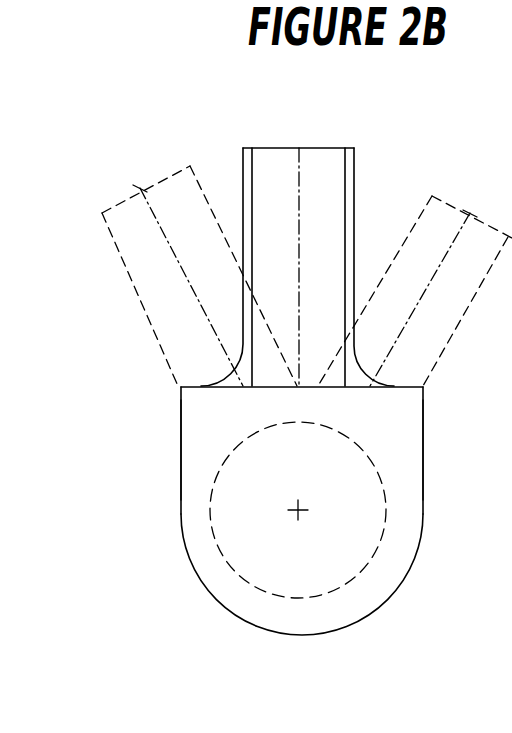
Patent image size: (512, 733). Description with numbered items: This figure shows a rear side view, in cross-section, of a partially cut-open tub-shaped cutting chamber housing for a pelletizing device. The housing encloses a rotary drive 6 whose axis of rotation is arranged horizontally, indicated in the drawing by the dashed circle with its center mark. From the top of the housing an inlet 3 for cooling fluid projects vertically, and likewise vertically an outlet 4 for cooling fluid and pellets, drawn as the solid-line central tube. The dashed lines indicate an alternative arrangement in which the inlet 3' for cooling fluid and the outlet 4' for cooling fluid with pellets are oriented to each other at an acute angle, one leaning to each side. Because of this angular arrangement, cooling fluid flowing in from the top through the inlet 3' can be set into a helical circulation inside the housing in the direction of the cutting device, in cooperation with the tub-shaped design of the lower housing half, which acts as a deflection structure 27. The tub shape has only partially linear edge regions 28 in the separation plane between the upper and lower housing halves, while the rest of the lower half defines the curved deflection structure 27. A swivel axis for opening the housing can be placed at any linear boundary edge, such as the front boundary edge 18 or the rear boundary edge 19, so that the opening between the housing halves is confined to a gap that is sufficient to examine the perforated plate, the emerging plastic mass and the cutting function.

The outlet 4 is at (226, 250).
The inlet 3 is at (318, 251).
The outlet 4' is at (199, 256).
The inlet 3' is at (415, 257).
The linear edge regions 28 is at (178, 478).
The deflection structure 27 is at (383, 609).
The front boundary edge 18 is at (182, 449).
The rear boundary edge 19 is at (424, 410).
The rotary drive 6 is at (290, 583).